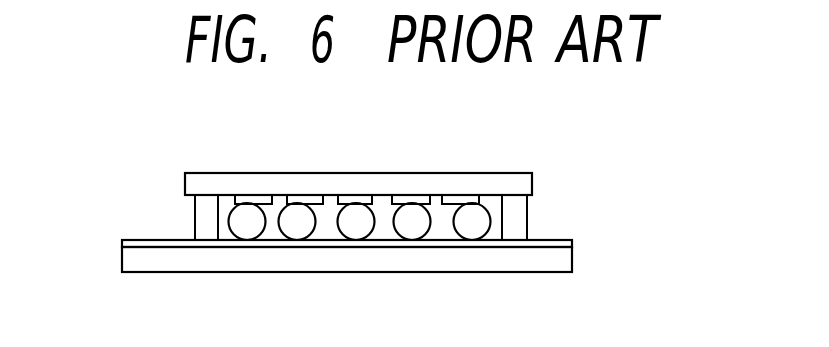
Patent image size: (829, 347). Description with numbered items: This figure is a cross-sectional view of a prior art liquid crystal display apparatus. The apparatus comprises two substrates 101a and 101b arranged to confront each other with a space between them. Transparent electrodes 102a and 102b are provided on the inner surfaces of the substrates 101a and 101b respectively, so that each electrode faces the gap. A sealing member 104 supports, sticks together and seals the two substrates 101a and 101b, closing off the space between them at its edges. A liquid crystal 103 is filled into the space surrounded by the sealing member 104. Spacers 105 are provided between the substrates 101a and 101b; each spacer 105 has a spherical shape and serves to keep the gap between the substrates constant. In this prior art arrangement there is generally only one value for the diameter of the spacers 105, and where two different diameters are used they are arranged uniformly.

The substrate 101a is at (523, 182).
The substrate 101b is at (565, 256).
The transparent electrode 102a is at (465, 198).
The transparent electrode 102b is at (572, 244).
The liquid crystal 103 is at (382, 215).
The sealing member 104 is at (517, 215).
The spacer 105 is at (247, 217).